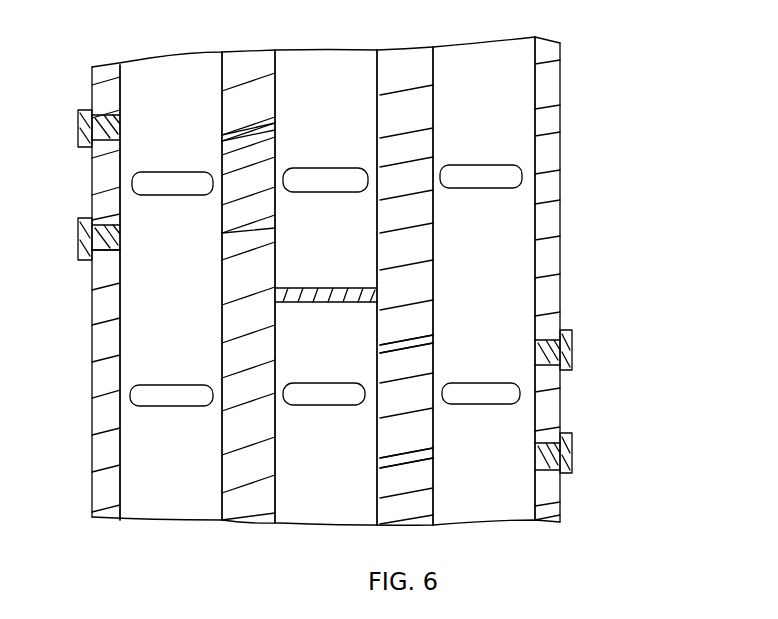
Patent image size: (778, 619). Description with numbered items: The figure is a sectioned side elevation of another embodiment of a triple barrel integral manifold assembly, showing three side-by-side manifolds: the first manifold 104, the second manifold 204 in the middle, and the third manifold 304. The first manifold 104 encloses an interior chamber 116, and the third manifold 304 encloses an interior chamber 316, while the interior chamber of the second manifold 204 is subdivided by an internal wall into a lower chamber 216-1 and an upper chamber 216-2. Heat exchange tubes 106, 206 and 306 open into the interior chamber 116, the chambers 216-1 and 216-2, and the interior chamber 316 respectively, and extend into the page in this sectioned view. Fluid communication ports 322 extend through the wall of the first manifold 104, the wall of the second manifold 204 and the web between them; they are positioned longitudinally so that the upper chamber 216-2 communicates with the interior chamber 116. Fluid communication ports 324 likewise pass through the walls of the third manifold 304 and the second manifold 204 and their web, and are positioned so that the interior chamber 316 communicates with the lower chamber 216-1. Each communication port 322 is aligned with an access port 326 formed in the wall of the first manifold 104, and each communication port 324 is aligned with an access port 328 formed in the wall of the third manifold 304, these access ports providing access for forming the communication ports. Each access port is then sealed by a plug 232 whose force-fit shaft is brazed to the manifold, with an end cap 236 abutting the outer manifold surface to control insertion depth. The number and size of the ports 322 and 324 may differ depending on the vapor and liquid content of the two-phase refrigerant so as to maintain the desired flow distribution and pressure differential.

The first manifold 104 is at (88, 82).
The second manifold 204 is at (275, 87).
The third manifold 304 is at (560, 80).
The heat exchange tubes 106 is at (188, 172).
The heat exchange tubes 206 is at (310, 193).
The heat exchange tubes 306 is at (498, 137).
The interior chamber 116 is at (182, 302).
The lower chamber 216-1 is at (326, 413).
The upper chamber 216-2 is at (350, 128).
The interior chamber 316 is at (485, 272).
The plug 232 is at (78, 240).
The end cap 236 is at (77, 273).
The fluid communication port 322 is at (273, 130).
The fluid communication port 324 is at (433, 347).
The access port 326 is at (106, 124).
The access port 328 is at (553, 352).